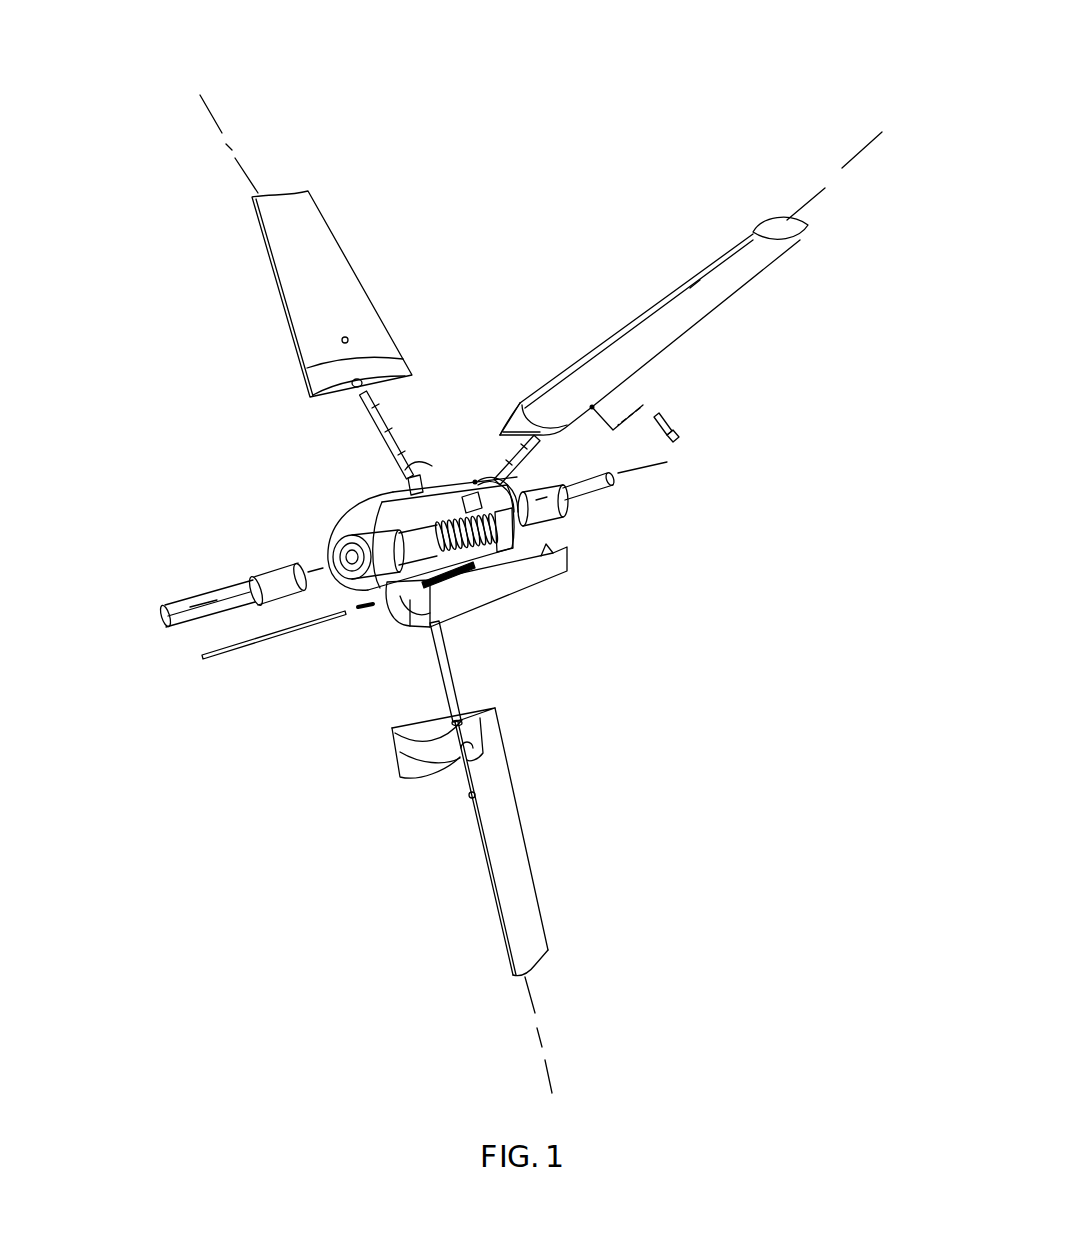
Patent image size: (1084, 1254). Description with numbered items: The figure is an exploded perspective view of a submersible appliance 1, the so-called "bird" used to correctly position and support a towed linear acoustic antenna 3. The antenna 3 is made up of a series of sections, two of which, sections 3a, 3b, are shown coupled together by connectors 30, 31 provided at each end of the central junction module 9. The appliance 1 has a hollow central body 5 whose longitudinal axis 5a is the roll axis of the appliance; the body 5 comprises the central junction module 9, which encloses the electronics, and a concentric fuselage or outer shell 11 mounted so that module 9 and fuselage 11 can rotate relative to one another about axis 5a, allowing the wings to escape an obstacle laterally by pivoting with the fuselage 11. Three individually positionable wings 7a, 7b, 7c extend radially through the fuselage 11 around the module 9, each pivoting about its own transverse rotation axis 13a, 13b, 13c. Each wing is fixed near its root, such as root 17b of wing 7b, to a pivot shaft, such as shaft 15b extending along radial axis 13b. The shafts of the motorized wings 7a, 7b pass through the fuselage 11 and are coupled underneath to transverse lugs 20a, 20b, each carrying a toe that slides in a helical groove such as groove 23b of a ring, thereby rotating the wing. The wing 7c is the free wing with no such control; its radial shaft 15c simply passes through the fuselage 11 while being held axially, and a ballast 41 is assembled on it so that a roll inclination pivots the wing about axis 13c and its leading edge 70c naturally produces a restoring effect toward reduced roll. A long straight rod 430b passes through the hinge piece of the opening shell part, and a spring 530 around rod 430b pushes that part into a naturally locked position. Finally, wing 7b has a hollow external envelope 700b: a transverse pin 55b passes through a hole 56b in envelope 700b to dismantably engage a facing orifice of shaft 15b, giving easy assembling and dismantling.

The submersible appliance 1 is at (586, 603).
The towed linear acoustic antenna 3 is at (626, 484).
The antenna section 3a is at (182, 598).
The antenna section 3b is at (602, 498).
The hollow central body 5 is at (402, 571).
The longitudinal axis 5a is at (183, 602).
The wing 7a is at (296, 292).
The wing 7b is at (726, 258).
The wing 7c is at (510, 833).
The central junction module 9 is at (378, 542).
The fuselage or outer shell 11 is at (490, 597).
The transverse rotation axis 13a is at (228, 145).
The transverse rotation axis 13b is at (828, 178).
The transverse rotation axis 13c is at (535, 1010).
The pivot shaft 15b is at (500, 463).
The radial shaft 15c is at (457, 700).
The root 17b is at (521, 417).
The transverse lug 20a is at (408, 474).
The transverse lug 20b is at (478, 480).
The helical groove 23b is at (478, 562).
The connector 30 is at (283, 570).
The connector 31 is at (548, 508).
The ballast 41 is at (425, 763).
The transverse pin 55b is at (678, 442).
The hole 56b is at (592, 407).
The leading edge 70c is at (505, 915).
The long straight rod 430b is at (232, 648).
The spring 530 is at (358, 623).
The hollow external envelope 700b is at (663, 317).